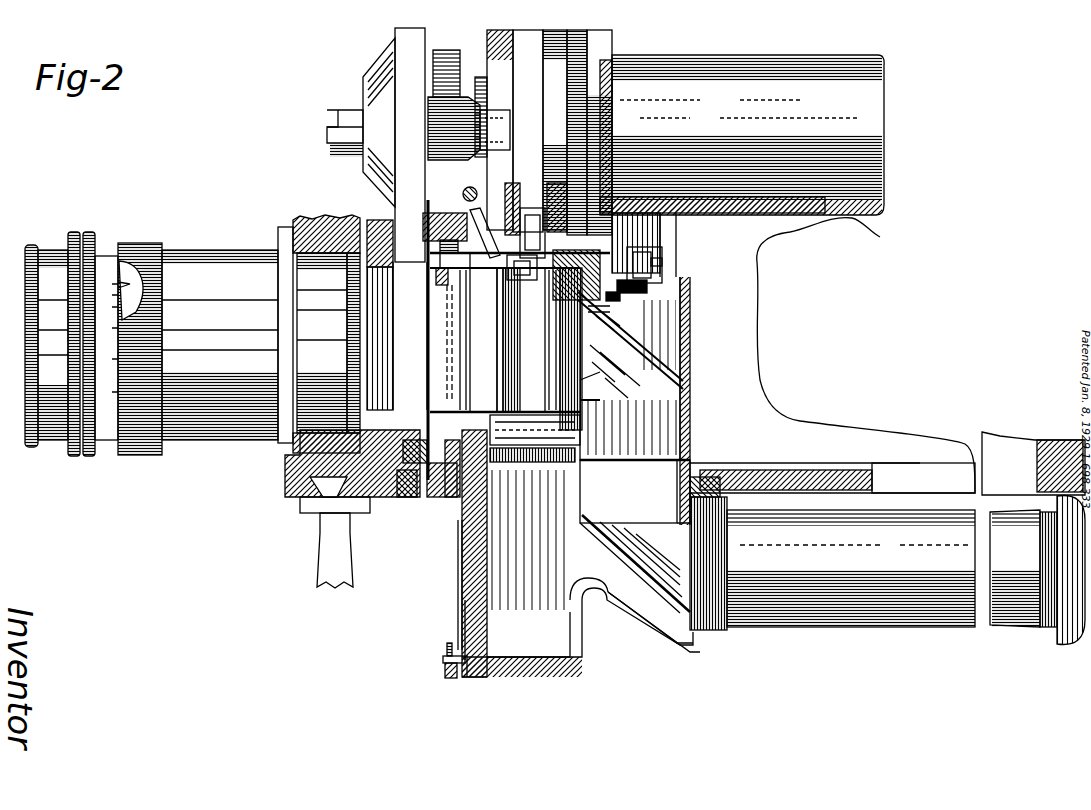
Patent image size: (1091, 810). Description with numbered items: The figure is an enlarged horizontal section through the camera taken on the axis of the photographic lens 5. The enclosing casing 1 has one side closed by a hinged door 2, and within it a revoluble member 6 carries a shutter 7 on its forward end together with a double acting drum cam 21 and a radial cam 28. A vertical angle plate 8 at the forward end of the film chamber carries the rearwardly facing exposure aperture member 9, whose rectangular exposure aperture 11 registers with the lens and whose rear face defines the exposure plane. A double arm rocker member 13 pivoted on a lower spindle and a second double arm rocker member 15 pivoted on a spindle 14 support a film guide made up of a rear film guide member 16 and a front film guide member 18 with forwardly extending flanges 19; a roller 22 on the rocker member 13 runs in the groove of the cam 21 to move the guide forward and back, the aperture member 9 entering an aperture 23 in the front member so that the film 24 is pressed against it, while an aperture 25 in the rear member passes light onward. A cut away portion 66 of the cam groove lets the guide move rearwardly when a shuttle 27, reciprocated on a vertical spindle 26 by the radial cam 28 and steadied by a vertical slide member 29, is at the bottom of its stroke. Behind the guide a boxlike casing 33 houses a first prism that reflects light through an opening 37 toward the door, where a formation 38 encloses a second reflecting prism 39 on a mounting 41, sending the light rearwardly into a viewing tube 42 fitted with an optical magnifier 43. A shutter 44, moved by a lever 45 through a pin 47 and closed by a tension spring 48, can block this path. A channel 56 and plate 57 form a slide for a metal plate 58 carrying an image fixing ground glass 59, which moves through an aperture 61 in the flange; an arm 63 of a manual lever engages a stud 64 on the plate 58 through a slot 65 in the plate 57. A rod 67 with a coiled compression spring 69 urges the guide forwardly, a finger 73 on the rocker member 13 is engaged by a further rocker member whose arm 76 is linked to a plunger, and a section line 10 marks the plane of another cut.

The enclosing casing 1 is at (852, 238).
The door 2 is at (853, 482).
The photographic lens 5 is at (108, 242).
The revoluble member 6 is at (432, 112).
The shutter 7 is at (395, 45).
The angle plate 8 is at (413, 497).
The exposure aperture member 9 is at (360, 293).
The section line 10 is at (582, 240).
The exposure aperture 11 is at (447, 342).
The double arm rocker member 13 is at (630, 368).
The spindle 14 is at (425, 498).
The double arm rocker member 15 is at (300, 478).
The rear film guide member 16 is at (493, 300).
The front film guide member 18 is at (440, 260).
The flanges 19 is at (440, 247).
The double acting drum cam 21 is at (530, 125).
The roller 22 is at (528, 208).
The aperture 23 is at (436, 275).
The film 24 is at (460, 343).
The aperture 25 is at (477, 350).
The vertical spindle 26 is at (476, 208).
The shuttle 27 is at (475, 205).
The radial cam 28 is at (480, 62).
The vertical slide member 29 is at (560, 435).
The boxlike enclosing casing 33 is at (627, 225).
The opening 37 is at (690, 401).
The formation 38 is at (510, 673).
The second glass reflecting prism 39 is at (653, 565).
The mounting 41 is at (635, 491).
The viewing tube 42 is at (853, 600).
The optical magnifier 43 is at (1037, 628).
The shutter 44 is at (582, 382).
The lever 45 is at (585, 407).
The pin 47 is at (594, 310).
The tension spring 48 is at (612, 297).
The channel 56 is at (463, 630).
The plate 57 is at (463, 678).
The metal plate 58 is at (467, 677).
The ground glass 59 is at (492, 480).
The aperture 61 is at (450, 497).
The arm 63 is at (443, 674).
The stud 64 is at (443, 660).
The slot 65 is at (460, 603).
The cut away portion 66 is at (550, 210).
The rod 67 is at (662, 264).
The coiled compression spring 69 is at (652, 262).
The finger 73 is at (520, 268).
The arm 76 is at (688, 374).